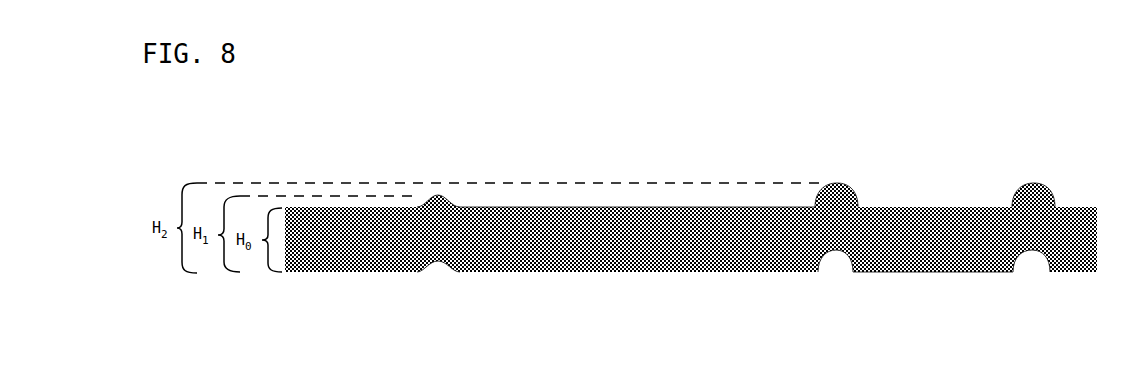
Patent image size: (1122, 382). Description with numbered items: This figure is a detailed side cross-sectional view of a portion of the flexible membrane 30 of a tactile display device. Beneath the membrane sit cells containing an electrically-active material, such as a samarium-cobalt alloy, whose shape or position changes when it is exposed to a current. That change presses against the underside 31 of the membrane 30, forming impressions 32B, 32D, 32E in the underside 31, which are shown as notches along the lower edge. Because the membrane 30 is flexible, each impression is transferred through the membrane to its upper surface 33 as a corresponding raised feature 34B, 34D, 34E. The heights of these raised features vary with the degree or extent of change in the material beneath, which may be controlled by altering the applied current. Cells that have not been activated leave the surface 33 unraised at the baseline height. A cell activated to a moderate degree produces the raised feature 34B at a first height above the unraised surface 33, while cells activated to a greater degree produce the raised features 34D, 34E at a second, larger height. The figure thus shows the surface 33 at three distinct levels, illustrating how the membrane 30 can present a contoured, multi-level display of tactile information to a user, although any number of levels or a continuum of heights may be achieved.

The membrane 30 is at (609, 246).
The underside 31 is at (923, 268).
The surface 33 is at (927, 207).
The raised feature 34B is at (435, 195).
The raised feature 34D is at (835, 197).
The raised feature 34E is at (1037, 197).
The impression 32B is at (440, 262).
The impression 32D is at (835, 255).
The impression 32E is at (1030, 255).